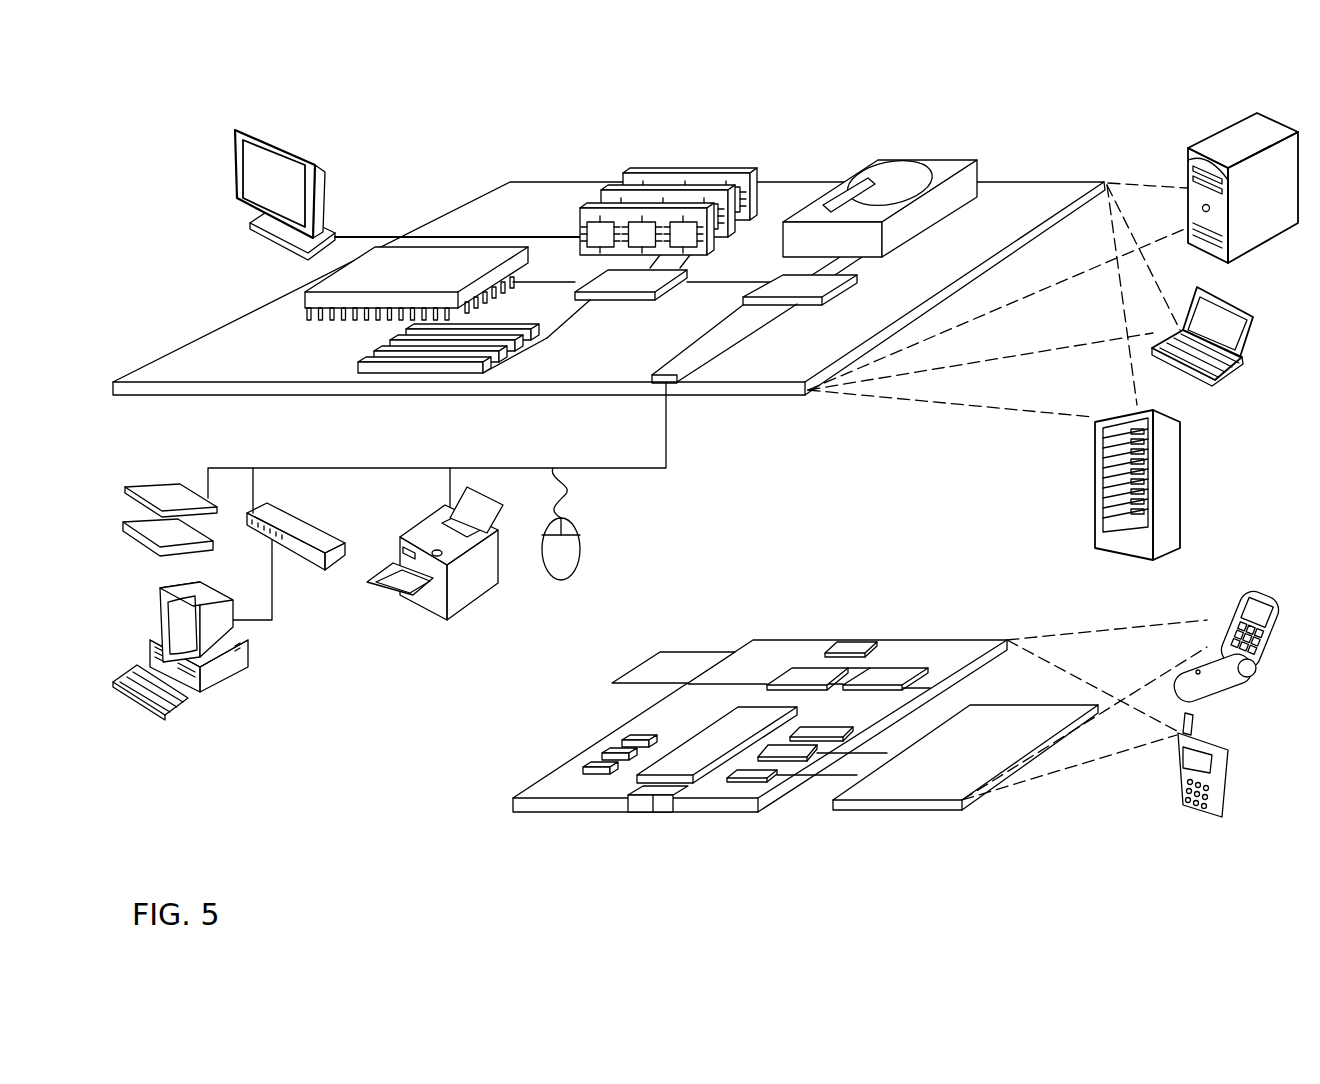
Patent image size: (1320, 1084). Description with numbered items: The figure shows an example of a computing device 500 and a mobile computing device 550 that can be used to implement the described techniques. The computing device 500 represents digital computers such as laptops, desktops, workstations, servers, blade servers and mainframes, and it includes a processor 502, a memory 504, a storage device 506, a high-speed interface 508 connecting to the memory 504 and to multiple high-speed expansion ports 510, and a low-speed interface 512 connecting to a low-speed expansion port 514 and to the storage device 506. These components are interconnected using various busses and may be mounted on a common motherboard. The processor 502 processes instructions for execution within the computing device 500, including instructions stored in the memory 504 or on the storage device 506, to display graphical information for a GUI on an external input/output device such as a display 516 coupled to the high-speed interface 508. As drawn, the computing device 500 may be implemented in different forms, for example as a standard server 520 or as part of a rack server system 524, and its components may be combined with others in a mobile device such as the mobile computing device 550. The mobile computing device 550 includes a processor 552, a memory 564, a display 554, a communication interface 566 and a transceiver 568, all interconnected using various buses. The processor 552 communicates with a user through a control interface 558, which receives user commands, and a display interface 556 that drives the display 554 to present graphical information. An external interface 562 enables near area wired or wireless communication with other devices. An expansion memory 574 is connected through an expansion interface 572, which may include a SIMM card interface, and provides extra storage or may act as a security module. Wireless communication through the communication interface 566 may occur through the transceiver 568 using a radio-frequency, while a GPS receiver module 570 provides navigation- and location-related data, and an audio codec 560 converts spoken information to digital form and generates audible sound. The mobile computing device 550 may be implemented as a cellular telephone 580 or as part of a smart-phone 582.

The computing device 500 is at (431, 145).
The processor 502 is at (305, 298).
The memory 504 is at (628, 175).
The storage device 506 is at (871, 167).
The high-speed interface 508 is at (605, 283).
The high-speed expansion ports 510 is at (360, 355).
The low-speed interface 512 is at (785, 292).
The low-speed expansion port 514 is at (678, 385).
The display 516 is at (236, 129).
The standard server 520 is at (1188, 161).
The rack server system 524 is at (1096, 508).
The mobile computing device 550 is at (482, 807).
The processor 552 is at (691, 773).
The display 554 is at (930, 796).
The display interface 556 is at (757, 780).
The control interface 558 is at (790, 755).
The audio codec 560 is at (815, 735).
The external interface 562 is at (652, 800).
The memory 564 is at (602, 764).
The communication interface 566 is at (810, 672).
The transceiver 568 is at (887, 672).
The GPS receiver module 570 is at (860, 645).
The expansion interface 572 is at (735, 650).
The expansion memory 574 is at (668, 652).
The cellular telephone 580 is at (1232, 600).
The smart-phone 582 is at (1172, 770).